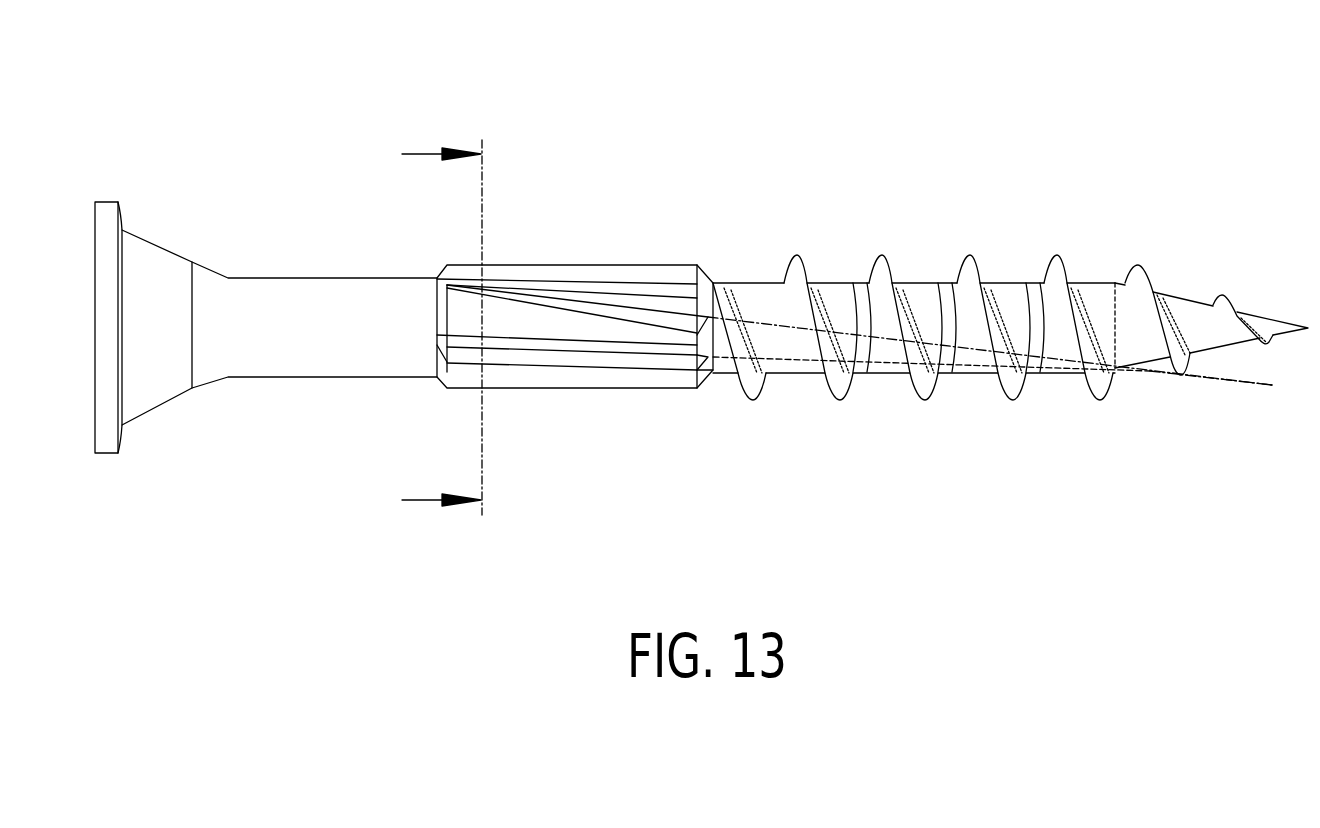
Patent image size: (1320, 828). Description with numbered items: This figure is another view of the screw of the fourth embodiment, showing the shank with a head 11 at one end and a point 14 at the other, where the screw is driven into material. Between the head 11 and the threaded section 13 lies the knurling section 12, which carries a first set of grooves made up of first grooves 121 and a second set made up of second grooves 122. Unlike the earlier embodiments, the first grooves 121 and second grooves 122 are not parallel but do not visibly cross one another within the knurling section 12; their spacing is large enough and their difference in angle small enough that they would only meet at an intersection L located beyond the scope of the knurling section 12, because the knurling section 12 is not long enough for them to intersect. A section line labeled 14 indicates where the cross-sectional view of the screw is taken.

The head 11 is at (108, 202).
The knurling section 12 is at (588, 308).
The first grooves 121 is at (692, 267).
The second grooves 122 is at (600, 302).
The threaded section 13 is at (1053, 262).
The point 14 is at (1266, 320).
The intersection L is at (1210, 378).